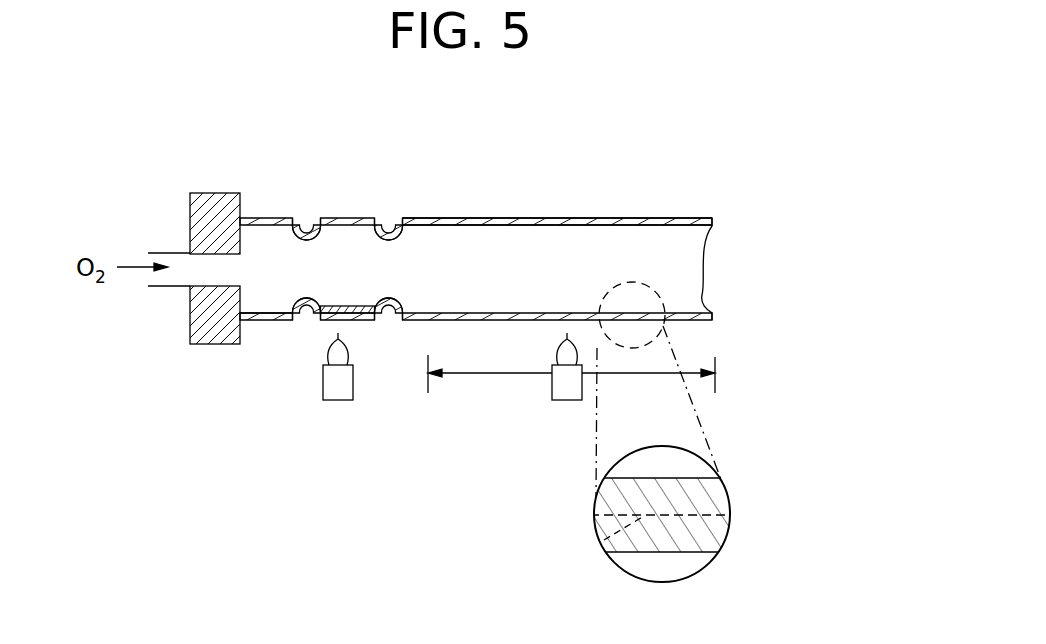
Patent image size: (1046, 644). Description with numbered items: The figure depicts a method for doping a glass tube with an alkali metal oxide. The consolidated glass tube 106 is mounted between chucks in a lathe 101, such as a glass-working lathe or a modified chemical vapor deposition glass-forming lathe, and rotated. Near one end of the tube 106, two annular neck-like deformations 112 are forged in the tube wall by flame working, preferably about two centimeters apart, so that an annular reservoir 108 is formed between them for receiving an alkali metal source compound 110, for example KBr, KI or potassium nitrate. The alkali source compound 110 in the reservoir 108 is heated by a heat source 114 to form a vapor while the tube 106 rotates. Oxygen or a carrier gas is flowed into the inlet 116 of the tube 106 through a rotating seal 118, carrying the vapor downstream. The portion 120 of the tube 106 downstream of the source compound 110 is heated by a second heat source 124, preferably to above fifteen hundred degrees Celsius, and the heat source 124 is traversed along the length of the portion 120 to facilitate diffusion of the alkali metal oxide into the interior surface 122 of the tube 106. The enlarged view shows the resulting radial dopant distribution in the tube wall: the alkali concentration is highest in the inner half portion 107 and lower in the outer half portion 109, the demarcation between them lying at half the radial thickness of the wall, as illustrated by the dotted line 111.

The lathe 101 is at (696, 138).
The glass tube 106 is at (487, 210).
The inner half portion 107 is at (716, 498).
The reservoir 108 is at (317, 323).
The outer half portion 109 is at (717, 540).
The alkali metal source compound 110 is at (356, 309).
The dotted line 111 is at (596, 536).
The annular neck-like deformations 112 is at (307, 233).
The heat source 114 is at (323, 385).
The inlet 116 is at (170, 252).
The rotating seal 118 is at (213, 192).
The portion of tube downstream 120 is at (588, 218).
The interior surface 122 is at (641, 226).
The heat source 124 is at (553, 385).